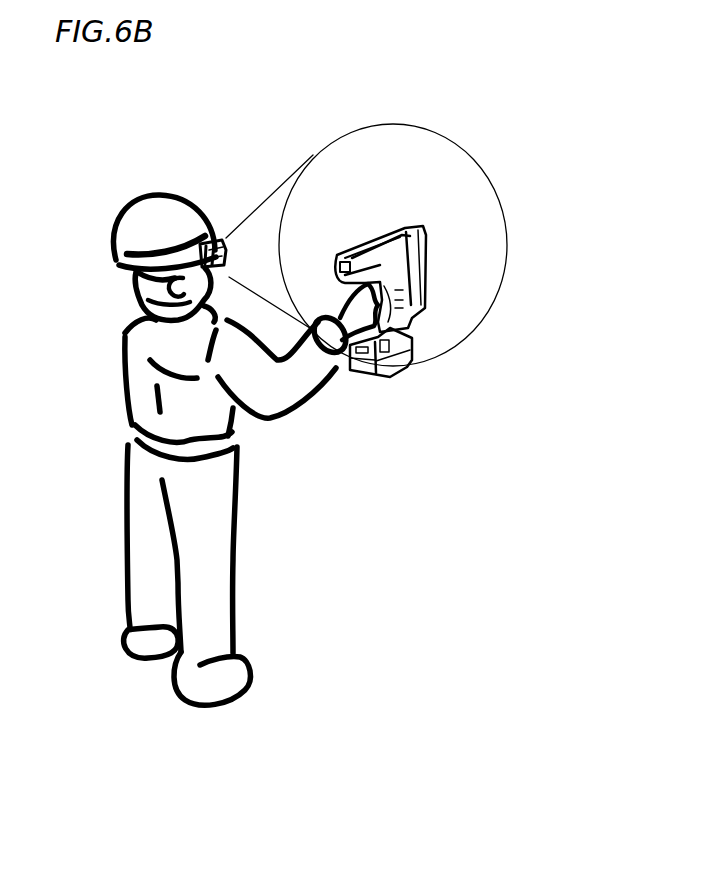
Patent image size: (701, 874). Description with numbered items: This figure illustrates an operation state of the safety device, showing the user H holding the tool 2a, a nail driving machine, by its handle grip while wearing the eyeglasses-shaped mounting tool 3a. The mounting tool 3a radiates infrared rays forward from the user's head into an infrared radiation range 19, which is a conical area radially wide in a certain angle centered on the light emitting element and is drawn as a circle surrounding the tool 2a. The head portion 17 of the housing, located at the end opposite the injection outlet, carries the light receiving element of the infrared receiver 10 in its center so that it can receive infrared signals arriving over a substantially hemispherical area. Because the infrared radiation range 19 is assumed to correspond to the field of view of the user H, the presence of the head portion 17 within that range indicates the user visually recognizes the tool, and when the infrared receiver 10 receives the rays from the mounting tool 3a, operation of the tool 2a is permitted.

The user H is at (224, 618).
The mounting tool 3a is at (222, 232).
The infrared receiver 10 is at (340, 253).
The tool 2a is at (364, 244).
The head portion of the housing 17 is at (336, 266).
The infrared radiation range 19 is at (480, 332).